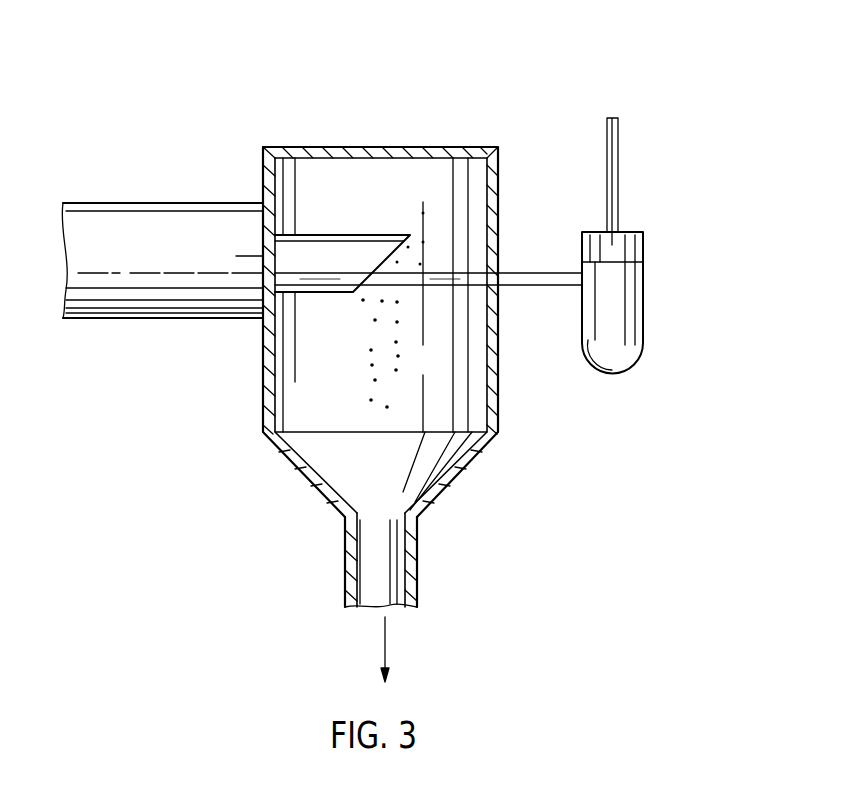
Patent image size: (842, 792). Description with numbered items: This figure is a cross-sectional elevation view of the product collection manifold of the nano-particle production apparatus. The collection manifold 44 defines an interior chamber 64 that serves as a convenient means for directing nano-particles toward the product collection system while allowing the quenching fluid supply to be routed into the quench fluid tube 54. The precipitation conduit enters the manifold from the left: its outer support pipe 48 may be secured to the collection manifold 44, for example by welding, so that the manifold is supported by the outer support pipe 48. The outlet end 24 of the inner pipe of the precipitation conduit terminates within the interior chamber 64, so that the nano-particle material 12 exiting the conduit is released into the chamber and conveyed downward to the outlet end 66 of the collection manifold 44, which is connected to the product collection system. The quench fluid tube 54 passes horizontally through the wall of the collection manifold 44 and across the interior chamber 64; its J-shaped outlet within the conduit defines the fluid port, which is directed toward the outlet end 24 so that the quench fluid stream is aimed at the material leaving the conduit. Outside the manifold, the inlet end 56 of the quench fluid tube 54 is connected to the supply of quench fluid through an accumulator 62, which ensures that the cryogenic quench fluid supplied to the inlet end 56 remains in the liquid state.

The nano-particle material 12 is at (365, 337).
The outlet end of precipitation conduit 24 is at (325, 235).
The collection manifold 44 is at (432, 147).
The outer support pipe 48 is at (127, 203).
The quench fluid tube 54 is at (437, 290).
The inlet end of quench fluid tube 56 is at (550, 273).
The accumulator 62 is at (643, 303).
The interior chamber 64 is at (347, 404).
The outlet end of collection manifold 66 is at (417, 556).